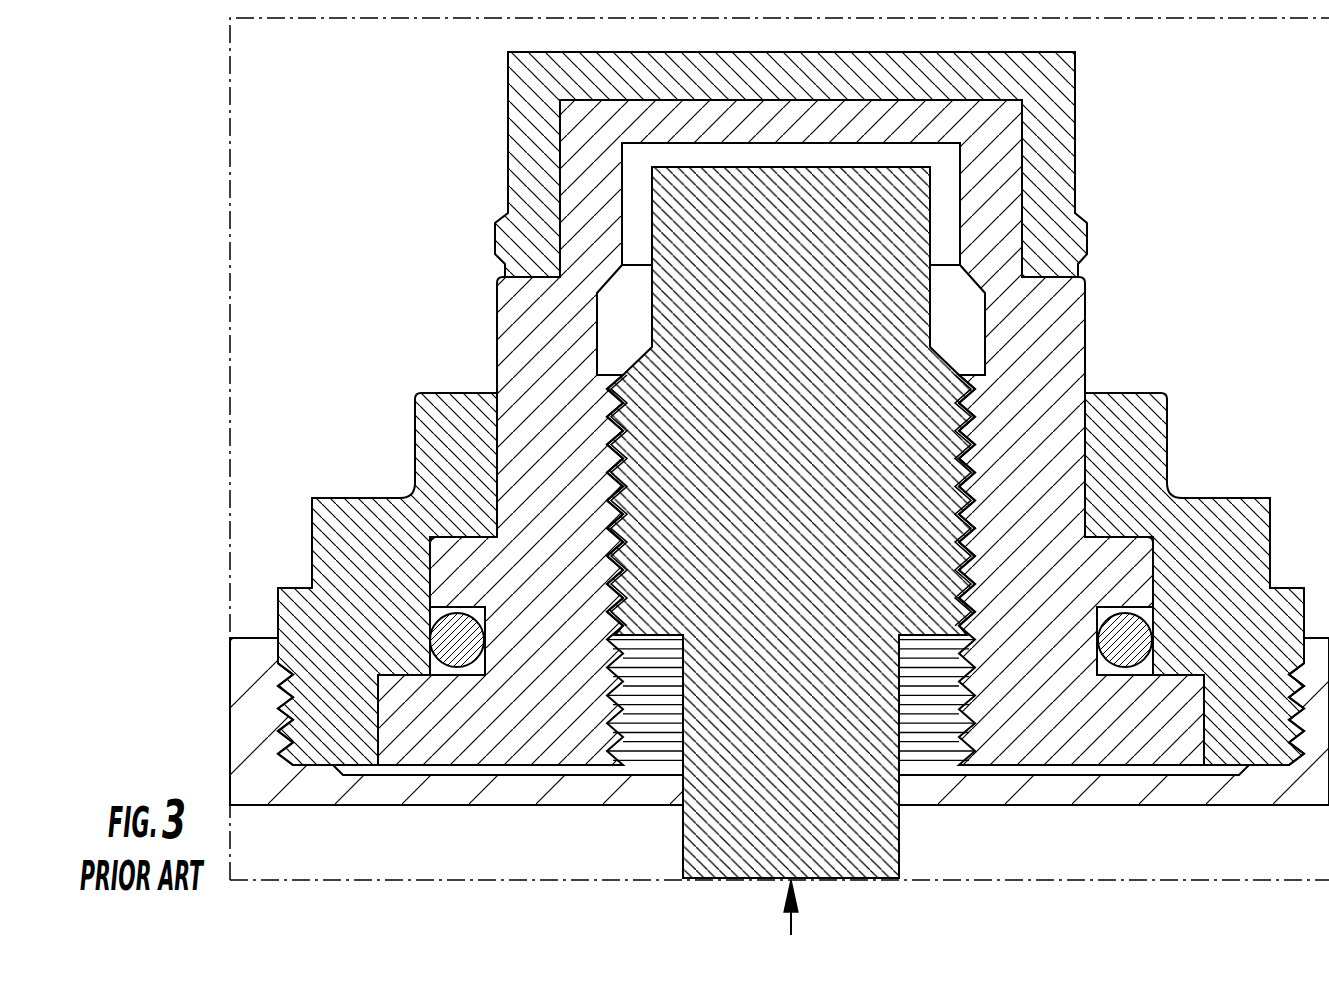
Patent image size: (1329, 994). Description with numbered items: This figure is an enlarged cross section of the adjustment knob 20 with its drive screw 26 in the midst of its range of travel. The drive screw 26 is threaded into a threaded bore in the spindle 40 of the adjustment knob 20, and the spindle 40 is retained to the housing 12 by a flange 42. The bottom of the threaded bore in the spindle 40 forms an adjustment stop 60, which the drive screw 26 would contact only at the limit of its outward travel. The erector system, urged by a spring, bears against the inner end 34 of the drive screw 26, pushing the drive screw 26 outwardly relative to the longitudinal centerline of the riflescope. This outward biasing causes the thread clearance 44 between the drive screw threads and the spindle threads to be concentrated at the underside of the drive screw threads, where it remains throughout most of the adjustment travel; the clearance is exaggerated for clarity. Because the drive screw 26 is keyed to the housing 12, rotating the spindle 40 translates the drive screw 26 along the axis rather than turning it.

The adjustment knob 20 is at (1275, 144).
The adjustment stop 60 is at (928, 145).
The spindle 40 is at (515, 320).
The thread clearance 44 is at (968, 438).
The flange 42 is at (1232, 505).
The housing 12 is at (1205, 793).
The drive screw 26 is at (697, 837).
The inner end 34 is at (821, 881).